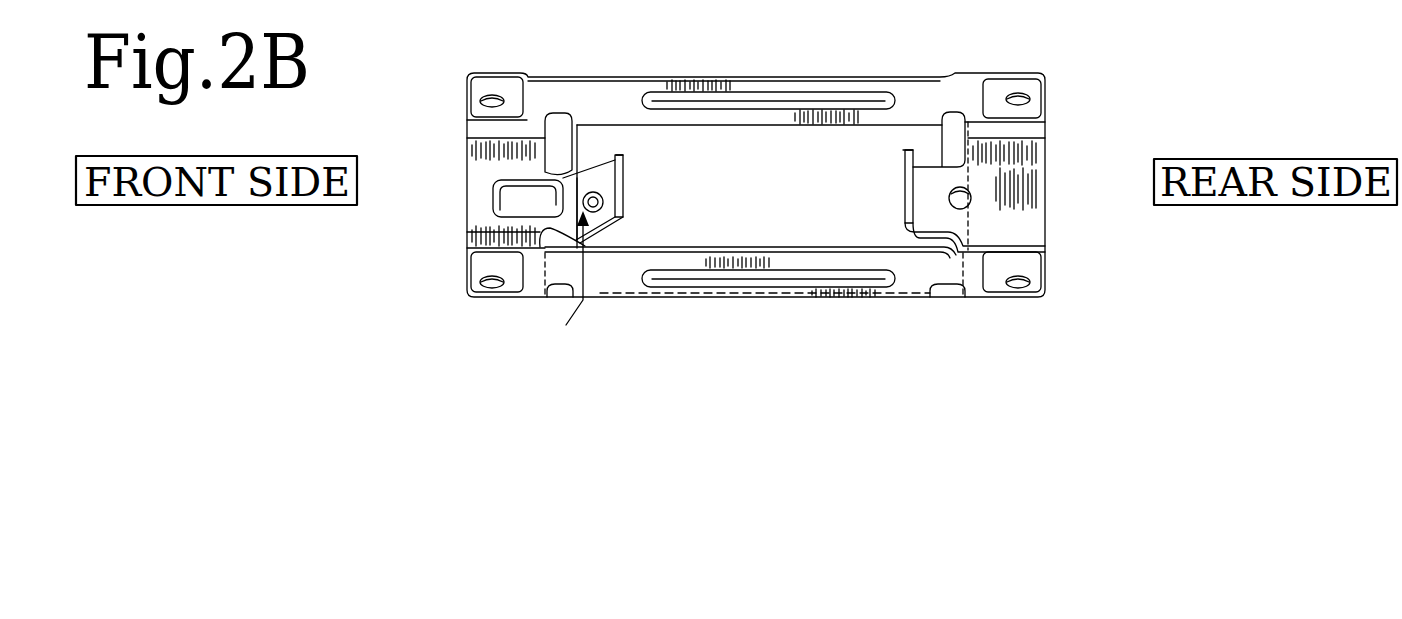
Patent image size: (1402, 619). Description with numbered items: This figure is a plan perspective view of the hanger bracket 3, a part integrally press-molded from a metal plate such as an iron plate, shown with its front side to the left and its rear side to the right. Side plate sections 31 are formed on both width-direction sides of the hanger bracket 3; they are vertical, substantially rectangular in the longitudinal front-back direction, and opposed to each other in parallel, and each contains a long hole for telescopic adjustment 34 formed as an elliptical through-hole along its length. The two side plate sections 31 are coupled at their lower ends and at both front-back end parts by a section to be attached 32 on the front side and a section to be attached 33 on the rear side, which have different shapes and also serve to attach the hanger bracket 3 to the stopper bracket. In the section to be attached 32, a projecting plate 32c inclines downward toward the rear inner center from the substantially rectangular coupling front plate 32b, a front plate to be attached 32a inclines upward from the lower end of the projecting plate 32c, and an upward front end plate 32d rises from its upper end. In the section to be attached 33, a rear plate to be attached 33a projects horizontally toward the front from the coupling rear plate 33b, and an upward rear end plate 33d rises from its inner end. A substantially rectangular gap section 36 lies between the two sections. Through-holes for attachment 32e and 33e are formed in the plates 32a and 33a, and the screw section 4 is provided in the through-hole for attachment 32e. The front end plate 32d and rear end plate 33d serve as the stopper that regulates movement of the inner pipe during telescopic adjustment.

The hanger bracket 3 is at (1052, 135).
The screw section 4 is at (569, 283).
The side plate section 31 is at (925, 280).
The section to be attached on the front side 32 is at (627, 187).
The front plate to be attached 32a is at (606, 244).
The coupling front plate 32b is at (500, 176).
The projecting plate 32c is at (570, 165).
The front end plate 32d is at (627, 158).
The through-hole for attachment 32e is at (593, 192).
The section to be attached on the rear side 33 is at (905, 153).
The rear plate to be attached 33a is at (941, 160).
The coupling rear plate 33b is at (1022, 231).
The rear end plate 33d is at (905, 212).
The through-hole for attachment 33e is at (960, 201).
The long hole for telescopic adjustment 34 is at (815, 96).
The gap section 36 is at (777, 180).